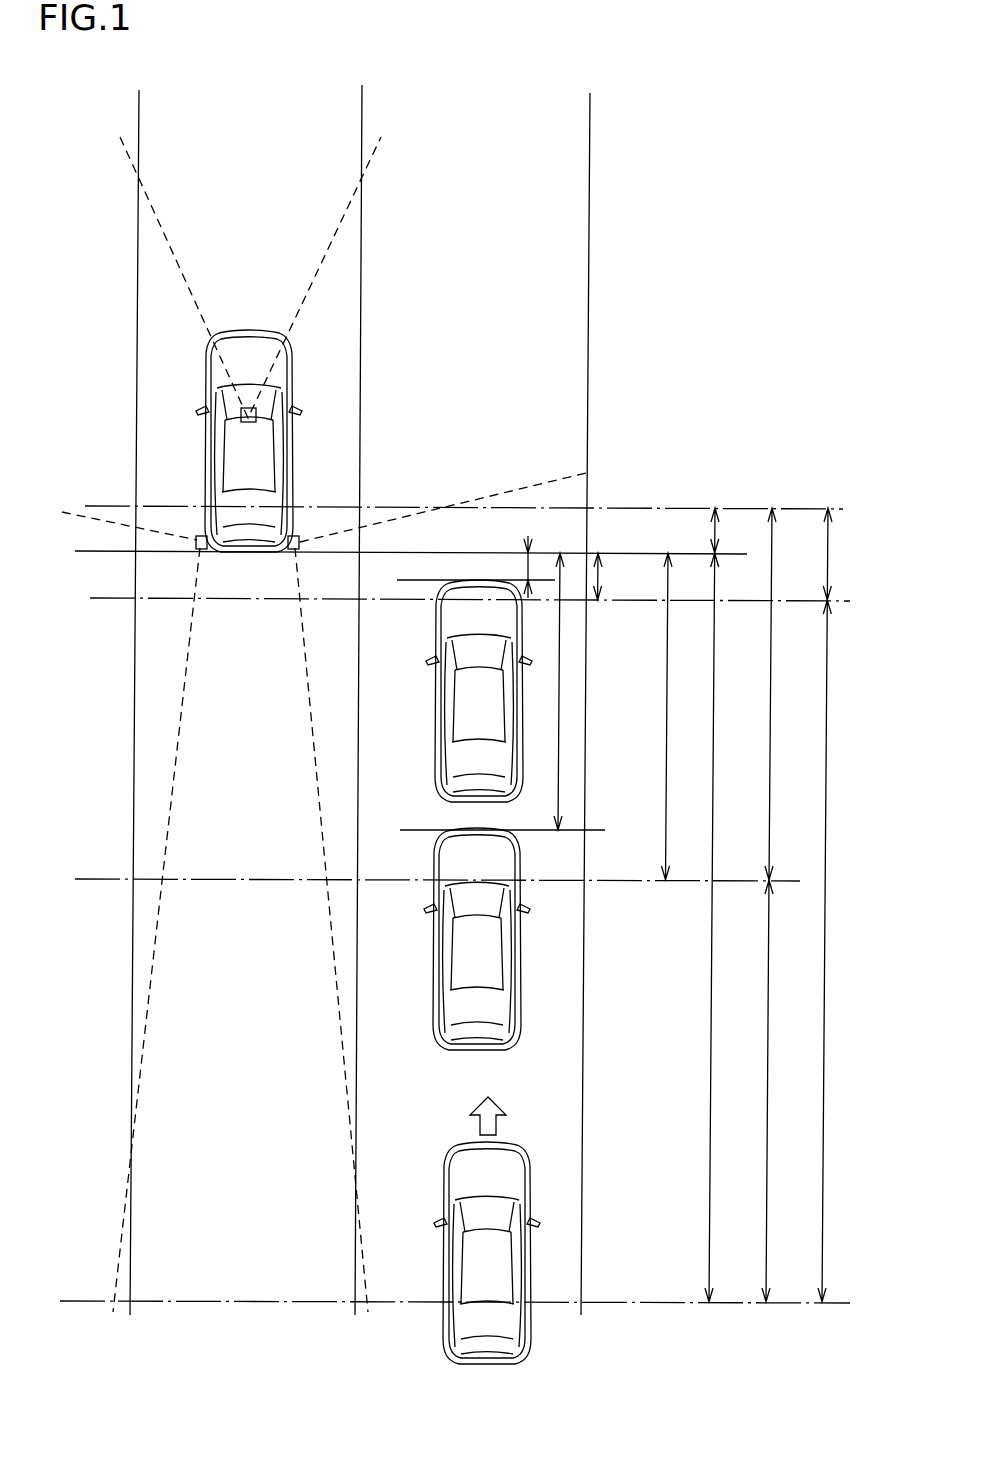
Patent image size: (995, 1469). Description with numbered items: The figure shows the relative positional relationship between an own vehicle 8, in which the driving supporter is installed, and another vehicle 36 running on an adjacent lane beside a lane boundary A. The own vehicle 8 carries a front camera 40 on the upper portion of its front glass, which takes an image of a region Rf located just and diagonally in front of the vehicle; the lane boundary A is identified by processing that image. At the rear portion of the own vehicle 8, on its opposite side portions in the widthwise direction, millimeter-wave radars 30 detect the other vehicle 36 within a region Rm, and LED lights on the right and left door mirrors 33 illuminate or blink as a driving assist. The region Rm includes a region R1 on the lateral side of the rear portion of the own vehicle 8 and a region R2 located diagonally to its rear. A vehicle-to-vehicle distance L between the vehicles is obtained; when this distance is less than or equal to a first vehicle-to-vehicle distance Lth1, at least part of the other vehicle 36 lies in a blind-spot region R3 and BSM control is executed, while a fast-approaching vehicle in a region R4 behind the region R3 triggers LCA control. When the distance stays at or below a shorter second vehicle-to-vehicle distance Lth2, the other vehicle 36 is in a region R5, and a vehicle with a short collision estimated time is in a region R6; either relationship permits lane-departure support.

The own vehicle 8 is at (187, 453).
The millimeter-wave radar 30 is at (297, 538).
The door mirror 33 is at (298, 410).
The another vehicle 36 is at (419, 677).
The front camera 40 is at (255, 423).
The lane boundary A is at (365, 242).
The region Rf is at (195, 257).
The region Rm is at (218, 852).
The vehicle-to-vehicle distance L is at (535, 683).
The first vehicle-to-vehicle distance Lth1 is at (645, 716).
The second vehicle-to-vehicle distance Lth2 is at (624, 576).
The region R1 is at (732, 530).
The region R2 is at (727, 927).
The region R3 is at (790, 694).
The region R4 is at (784, 1091).
The region R5 is at (844, 554).
The region R6 is at (839, 951).